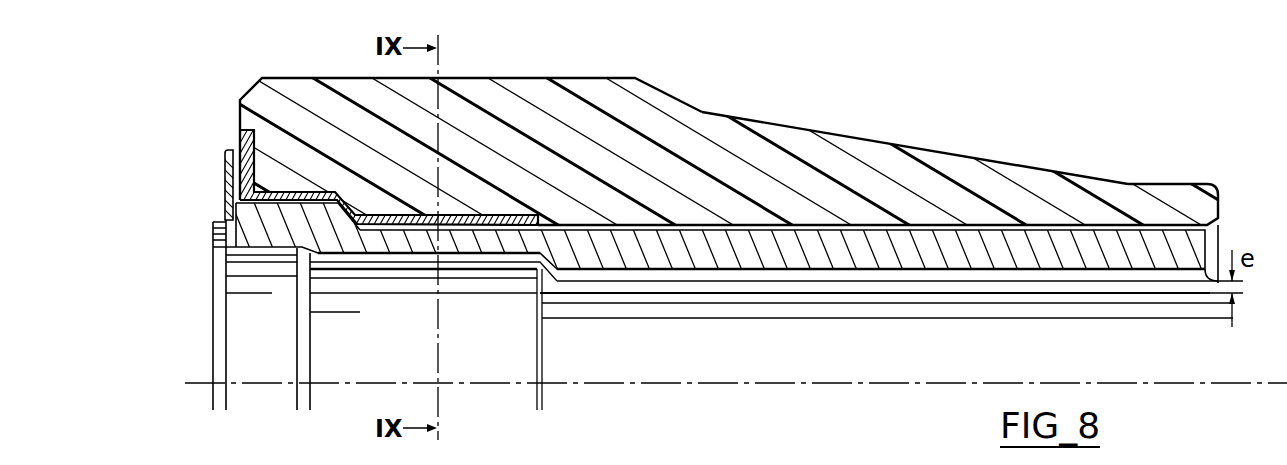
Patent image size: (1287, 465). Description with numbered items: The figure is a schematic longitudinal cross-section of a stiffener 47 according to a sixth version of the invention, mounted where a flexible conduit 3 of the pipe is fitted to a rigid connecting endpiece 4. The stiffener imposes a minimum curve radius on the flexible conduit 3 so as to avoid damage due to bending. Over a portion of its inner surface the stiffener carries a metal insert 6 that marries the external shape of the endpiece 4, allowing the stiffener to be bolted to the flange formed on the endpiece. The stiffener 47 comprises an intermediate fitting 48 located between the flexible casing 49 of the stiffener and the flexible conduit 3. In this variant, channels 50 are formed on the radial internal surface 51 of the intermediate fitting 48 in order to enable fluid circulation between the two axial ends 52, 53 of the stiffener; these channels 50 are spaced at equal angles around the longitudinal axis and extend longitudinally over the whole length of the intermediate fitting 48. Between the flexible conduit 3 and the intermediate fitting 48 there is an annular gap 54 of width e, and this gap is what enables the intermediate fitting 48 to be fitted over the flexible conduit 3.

The flexible conduit 3 is at (803, 294).
The rigid connecting endpiece 4 is at (247, 330).
The metal insert 6 is at (292, 190).
The stiffener 47 is at (537, 108).
The intermediate fitting 48 is at (1095, 248).
The flexible casing 49 is at (925, 180).
The channels 50 is at (975, 281).
The radial internal surface 51 is at (1102, 283).
The axial end 52 is at (1212, 273).
The axial end 53 is at (228, 208).
The annular gap 54 is at (602, 290).